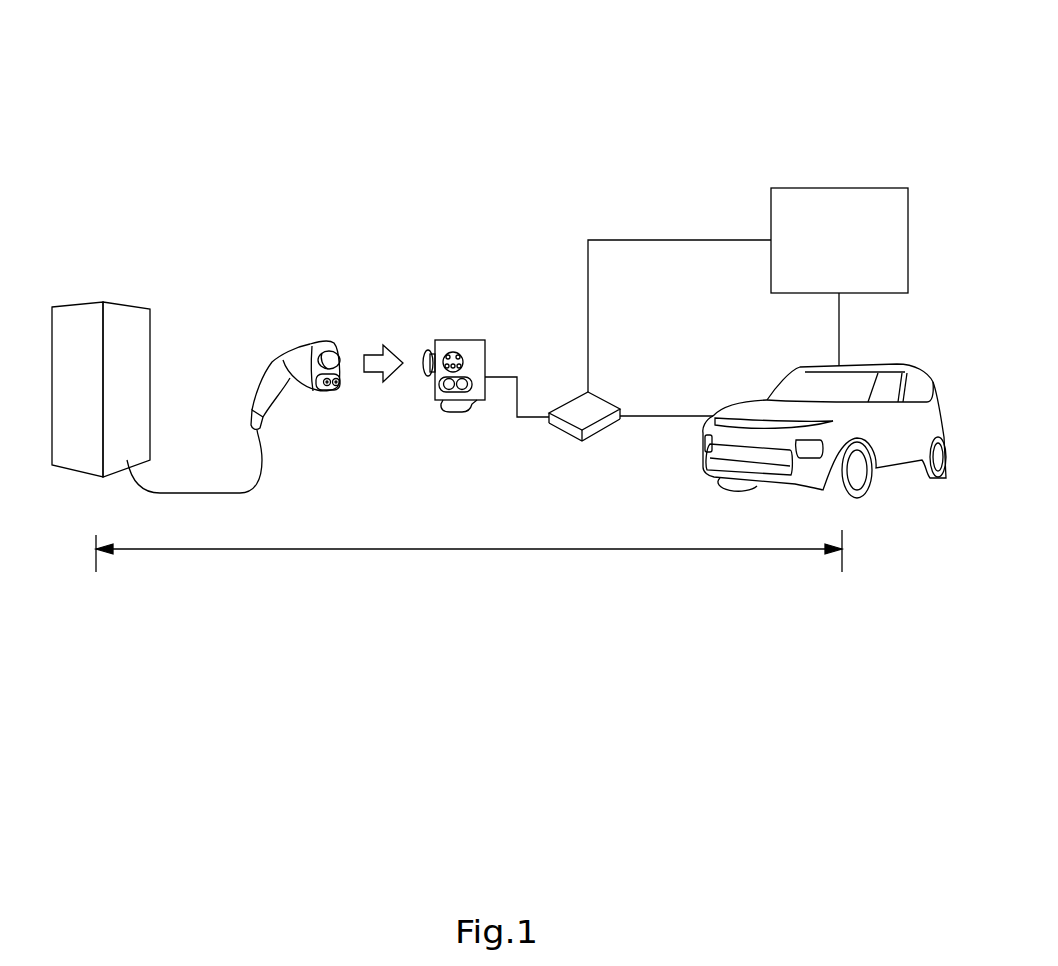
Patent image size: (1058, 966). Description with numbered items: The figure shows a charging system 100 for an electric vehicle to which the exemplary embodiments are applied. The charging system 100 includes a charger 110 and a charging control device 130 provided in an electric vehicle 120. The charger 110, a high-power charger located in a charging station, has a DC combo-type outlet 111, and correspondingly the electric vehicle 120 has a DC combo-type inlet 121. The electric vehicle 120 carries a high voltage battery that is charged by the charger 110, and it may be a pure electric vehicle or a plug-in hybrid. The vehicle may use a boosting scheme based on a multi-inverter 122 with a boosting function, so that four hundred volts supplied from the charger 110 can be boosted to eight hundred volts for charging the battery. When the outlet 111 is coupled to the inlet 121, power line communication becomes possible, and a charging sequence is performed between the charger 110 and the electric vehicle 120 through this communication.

The charging system 100 is at (640, 32).
The charger 110 is at (125, 303).
The DC combo-type outlet 111 is at (309, 344).
The electric vehicle 120 is at (906, 372).
The DC combo-type inlet 121 is at (462, 340).
The multi-inverter 122 is at (604, 401).
The charging control device 130 is at (838, 188).